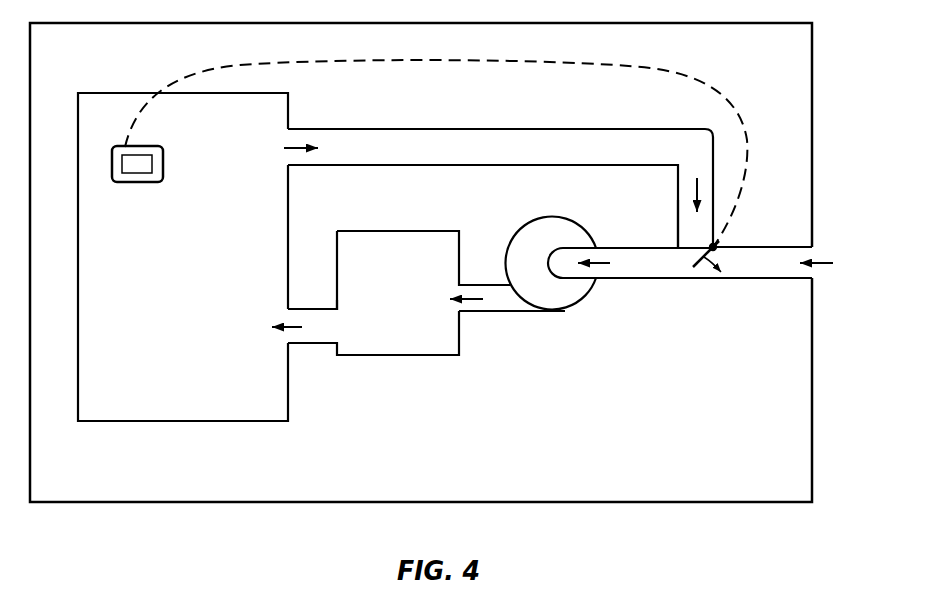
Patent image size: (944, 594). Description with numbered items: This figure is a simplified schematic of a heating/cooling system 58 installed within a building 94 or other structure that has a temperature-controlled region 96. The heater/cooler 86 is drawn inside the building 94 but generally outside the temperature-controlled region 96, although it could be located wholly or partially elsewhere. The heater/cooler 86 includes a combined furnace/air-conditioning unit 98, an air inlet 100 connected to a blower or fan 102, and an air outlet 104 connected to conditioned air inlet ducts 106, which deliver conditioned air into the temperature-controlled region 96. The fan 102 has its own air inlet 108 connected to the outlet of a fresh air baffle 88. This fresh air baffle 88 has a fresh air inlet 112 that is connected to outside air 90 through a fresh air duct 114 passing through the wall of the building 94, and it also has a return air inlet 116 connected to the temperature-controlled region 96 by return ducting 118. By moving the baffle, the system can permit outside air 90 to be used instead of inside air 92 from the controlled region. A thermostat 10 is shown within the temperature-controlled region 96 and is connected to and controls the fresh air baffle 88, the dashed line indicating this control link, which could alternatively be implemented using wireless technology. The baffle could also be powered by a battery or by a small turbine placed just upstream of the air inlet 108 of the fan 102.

The thermostat 10 is at (147, 146).
The heating/cooling system 58 is at (708, 428).
The heater/cooler 86 is at (380, 420).
The fresh air baffle 88 is at (729, 234).
The outside air 90 is at (849, 338).
The inside air 92 is at (186, 261).
The building 94 is at (815, 172).
The temperature-controlled region 96 is at (127, 422).
The furnace/air-conditioning (AC) unit 98 is at (383, 357).
The air inlet 100 is at (460, 310).
The blower or fan 102 is at (558, 303).
The air outlet 104 is at (337, 323).
The conditioned air inlet ducts 106 is at (308, 306).
The air inlet of fan 108 is at (562, 268).
The fresh air inlet 112 is at (720, 258).
The fresh air duct 114 is at (787, 278).
The return air inlet 116 is at (704, 241).
The return ducting 118 is at (637, 167).